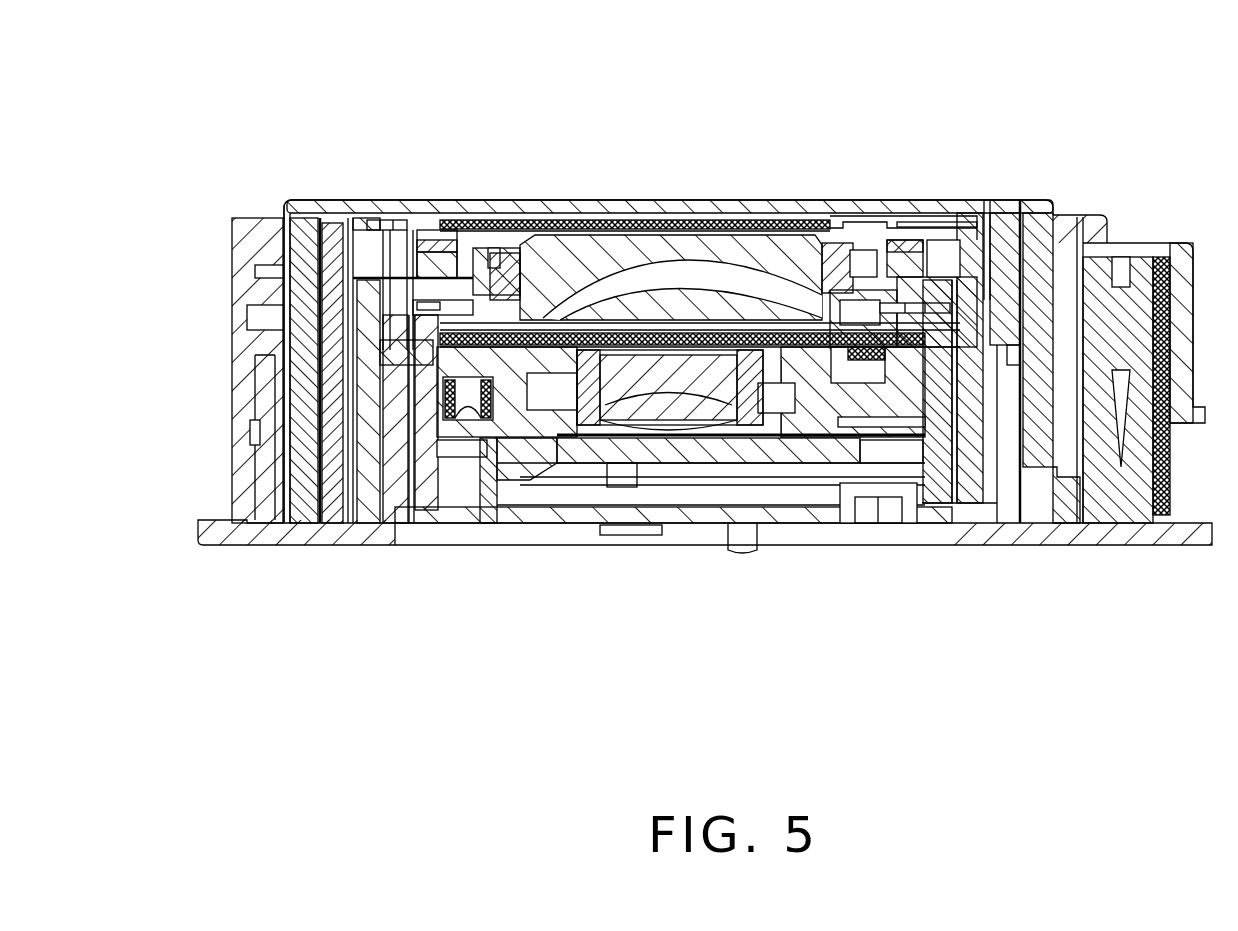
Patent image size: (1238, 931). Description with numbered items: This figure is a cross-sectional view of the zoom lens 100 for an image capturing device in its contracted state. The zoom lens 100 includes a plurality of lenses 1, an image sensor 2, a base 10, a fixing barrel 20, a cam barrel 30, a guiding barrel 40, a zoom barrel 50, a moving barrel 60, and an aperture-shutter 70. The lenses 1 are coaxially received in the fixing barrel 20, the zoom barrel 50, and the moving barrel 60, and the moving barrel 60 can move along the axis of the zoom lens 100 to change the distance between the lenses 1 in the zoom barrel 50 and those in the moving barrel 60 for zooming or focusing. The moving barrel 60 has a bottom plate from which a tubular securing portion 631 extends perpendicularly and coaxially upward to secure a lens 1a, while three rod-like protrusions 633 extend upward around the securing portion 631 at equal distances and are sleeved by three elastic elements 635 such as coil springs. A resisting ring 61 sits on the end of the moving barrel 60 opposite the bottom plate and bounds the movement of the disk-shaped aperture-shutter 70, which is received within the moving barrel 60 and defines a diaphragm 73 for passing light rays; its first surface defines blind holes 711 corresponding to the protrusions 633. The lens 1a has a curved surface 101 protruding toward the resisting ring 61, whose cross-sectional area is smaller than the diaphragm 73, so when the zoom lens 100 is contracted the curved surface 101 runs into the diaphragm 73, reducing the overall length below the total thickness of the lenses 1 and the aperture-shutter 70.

The zoom lens 100 is at (396, 72).
The lenses 1 is at (559, 203).
The lens 1a is at (735, 300).
The image sensor 2 is at (550, 514).
The base 10 is at (224, 537).
The fixing barrel 20 is at (247, 496).
The cam barrel 30 is at (297, 514).
The guiding barrel 40 is at (330, 513).
The zoom barrel 50 is at (358, 512).
The moving barrel 60 is at (428, 512).
The resisting ring 61 is at (426, 240).
The aperture-shutter 70 is at (396, 285).
The diaphragm 73 is at (630, 323).
The curved surface 101 is at (683, 335).
The securing portion 631 is at (622, 425).
The protrusions 633 is at (460, 445).
The elastic elements 635 is at (443, 392).
The blind holes 711 is at (400, 352).